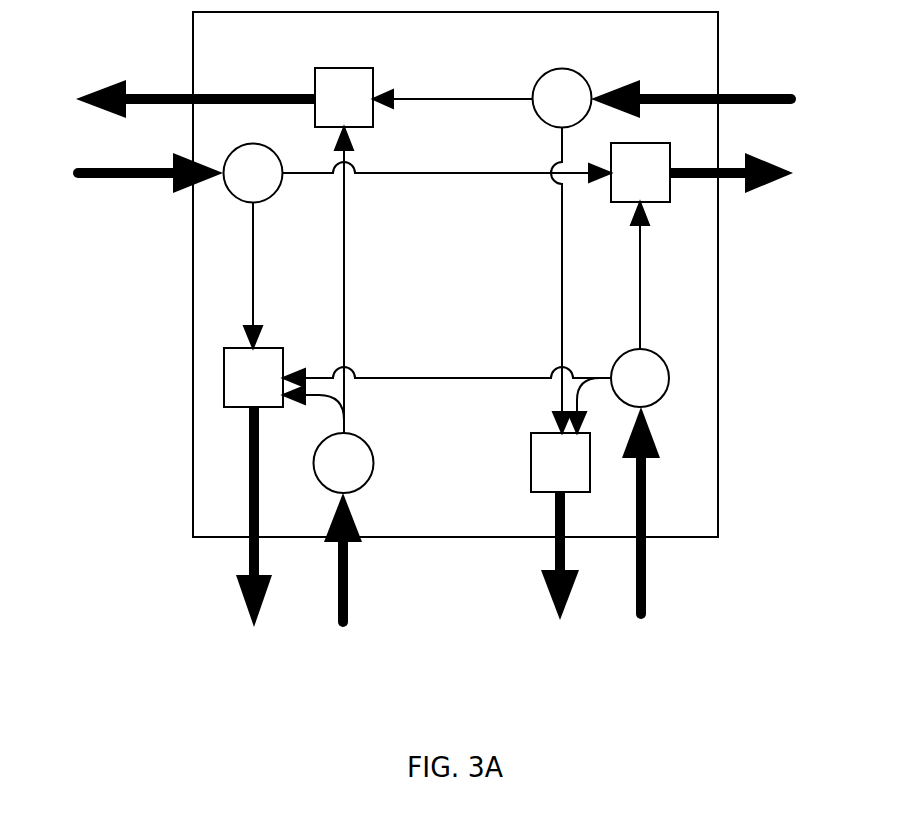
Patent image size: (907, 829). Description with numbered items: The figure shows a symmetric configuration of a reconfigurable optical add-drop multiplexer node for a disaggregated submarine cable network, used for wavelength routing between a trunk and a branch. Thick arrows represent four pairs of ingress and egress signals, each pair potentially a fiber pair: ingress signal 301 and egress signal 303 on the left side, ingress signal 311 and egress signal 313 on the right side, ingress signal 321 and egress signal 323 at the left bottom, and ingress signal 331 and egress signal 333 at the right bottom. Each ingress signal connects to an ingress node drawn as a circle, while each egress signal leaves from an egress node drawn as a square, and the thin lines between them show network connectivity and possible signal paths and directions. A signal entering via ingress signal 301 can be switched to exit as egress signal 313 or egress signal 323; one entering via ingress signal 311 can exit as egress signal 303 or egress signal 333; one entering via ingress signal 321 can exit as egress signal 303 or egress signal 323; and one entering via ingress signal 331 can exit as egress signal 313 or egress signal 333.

The ingress signal 301 is at (93, 165).
The egress signal 303 is at (93, 90).
The ingress signal 311 is at (773, 89).
The egress signal 313 is at (777, 160).
The ingress signal 321 is at (337, 608).
The egress signal 323 is at (250, 608).
The ingress signal 331 is at (637, 608).
The egress signal 333 is at (550, 608).